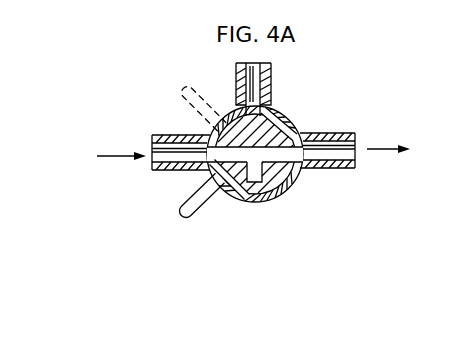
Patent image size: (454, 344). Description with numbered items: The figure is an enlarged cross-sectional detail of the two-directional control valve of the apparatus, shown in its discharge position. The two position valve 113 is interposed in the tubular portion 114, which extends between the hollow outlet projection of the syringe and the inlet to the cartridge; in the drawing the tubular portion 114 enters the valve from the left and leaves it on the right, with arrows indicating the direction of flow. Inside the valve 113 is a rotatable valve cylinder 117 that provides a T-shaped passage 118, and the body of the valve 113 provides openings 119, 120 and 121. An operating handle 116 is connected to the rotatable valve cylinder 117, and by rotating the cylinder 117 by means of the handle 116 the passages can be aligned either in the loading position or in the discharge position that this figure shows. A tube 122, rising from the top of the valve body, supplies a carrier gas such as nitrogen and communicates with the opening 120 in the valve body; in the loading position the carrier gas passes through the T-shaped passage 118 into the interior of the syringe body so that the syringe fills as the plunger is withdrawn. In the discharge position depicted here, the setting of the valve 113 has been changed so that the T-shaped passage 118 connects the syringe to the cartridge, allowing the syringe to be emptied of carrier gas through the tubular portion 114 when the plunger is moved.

The two position valve 113 is at (284, 117).
The tubular portion 114 is at (341, 133).
The operating handle 116 is at (182, 100).
The rotatable valve cylinder 117 is at (291, 187).
The T-shaped passage 118 is at (252, 186).
The opening 119 is at (183, 177).
The opening 120 is at (273, 98).
The opening 121 is at (305, 162).
The tube 122 is at (240, 76).